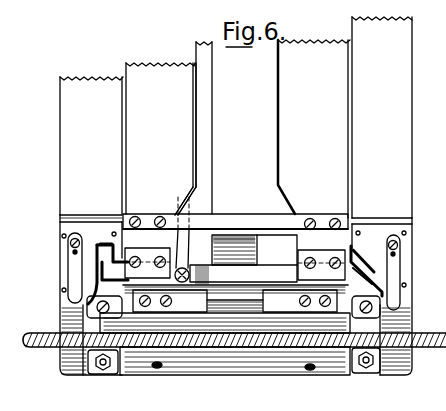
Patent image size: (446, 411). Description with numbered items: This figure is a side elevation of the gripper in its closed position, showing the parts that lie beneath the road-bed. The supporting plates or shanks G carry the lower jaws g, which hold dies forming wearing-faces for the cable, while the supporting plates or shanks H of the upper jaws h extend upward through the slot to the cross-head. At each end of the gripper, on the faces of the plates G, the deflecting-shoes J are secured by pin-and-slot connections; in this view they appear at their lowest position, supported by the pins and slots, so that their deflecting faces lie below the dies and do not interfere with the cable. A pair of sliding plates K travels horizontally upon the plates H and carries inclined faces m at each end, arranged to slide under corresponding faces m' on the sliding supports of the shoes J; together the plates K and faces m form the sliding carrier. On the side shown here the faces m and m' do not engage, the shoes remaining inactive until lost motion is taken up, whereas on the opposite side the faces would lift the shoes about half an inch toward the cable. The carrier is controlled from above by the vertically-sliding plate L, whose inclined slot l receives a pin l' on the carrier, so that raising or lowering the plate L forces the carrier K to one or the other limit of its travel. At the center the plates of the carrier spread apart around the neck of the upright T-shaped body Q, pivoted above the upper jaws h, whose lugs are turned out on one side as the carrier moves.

The supporting plates or shanks G is at (236, 117).
The supporting plates or shanks of the upper jaws H is at (238, 127).
The vertically-sliding plate L is at (210, 143).
The deflecting-shoes J is at (62, 260).
The inclined faces m is at (202, 256).
The corresponding faces m' is at (260, 240).
The inclined slot l is at (199, 201).
The pin l' is at (189, 239).
The T-shaped body Q is at (258, 250).
The sliding plates K is at (297, 273).
The upper jaws h is at (283, 322).
The lower jaws g is at (259, 372).